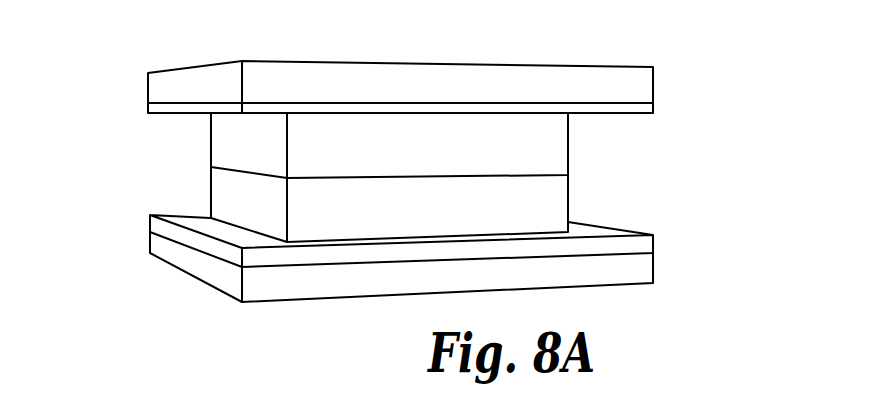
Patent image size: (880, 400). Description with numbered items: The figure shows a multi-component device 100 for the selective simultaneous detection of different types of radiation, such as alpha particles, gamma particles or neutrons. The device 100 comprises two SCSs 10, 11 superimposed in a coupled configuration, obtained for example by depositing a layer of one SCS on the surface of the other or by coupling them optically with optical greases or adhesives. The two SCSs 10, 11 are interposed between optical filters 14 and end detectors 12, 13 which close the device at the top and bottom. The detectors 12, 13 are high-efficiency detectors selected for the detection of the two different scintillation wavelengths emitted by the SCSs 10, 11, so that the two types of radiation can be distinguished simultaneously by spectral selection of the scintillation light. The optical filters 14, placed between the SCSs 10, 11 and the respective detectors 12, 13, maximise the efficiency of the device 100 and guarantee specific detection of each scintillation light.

The SCS 10 is at (550, 143).
The SCS 11 is at (545, 196).
The end detector 12 is at (145, 82).
The end detector 13 is at (150, 248).
The optical filter 14 is at (148, 108).
The multi-component device 100 is at (690, 57).